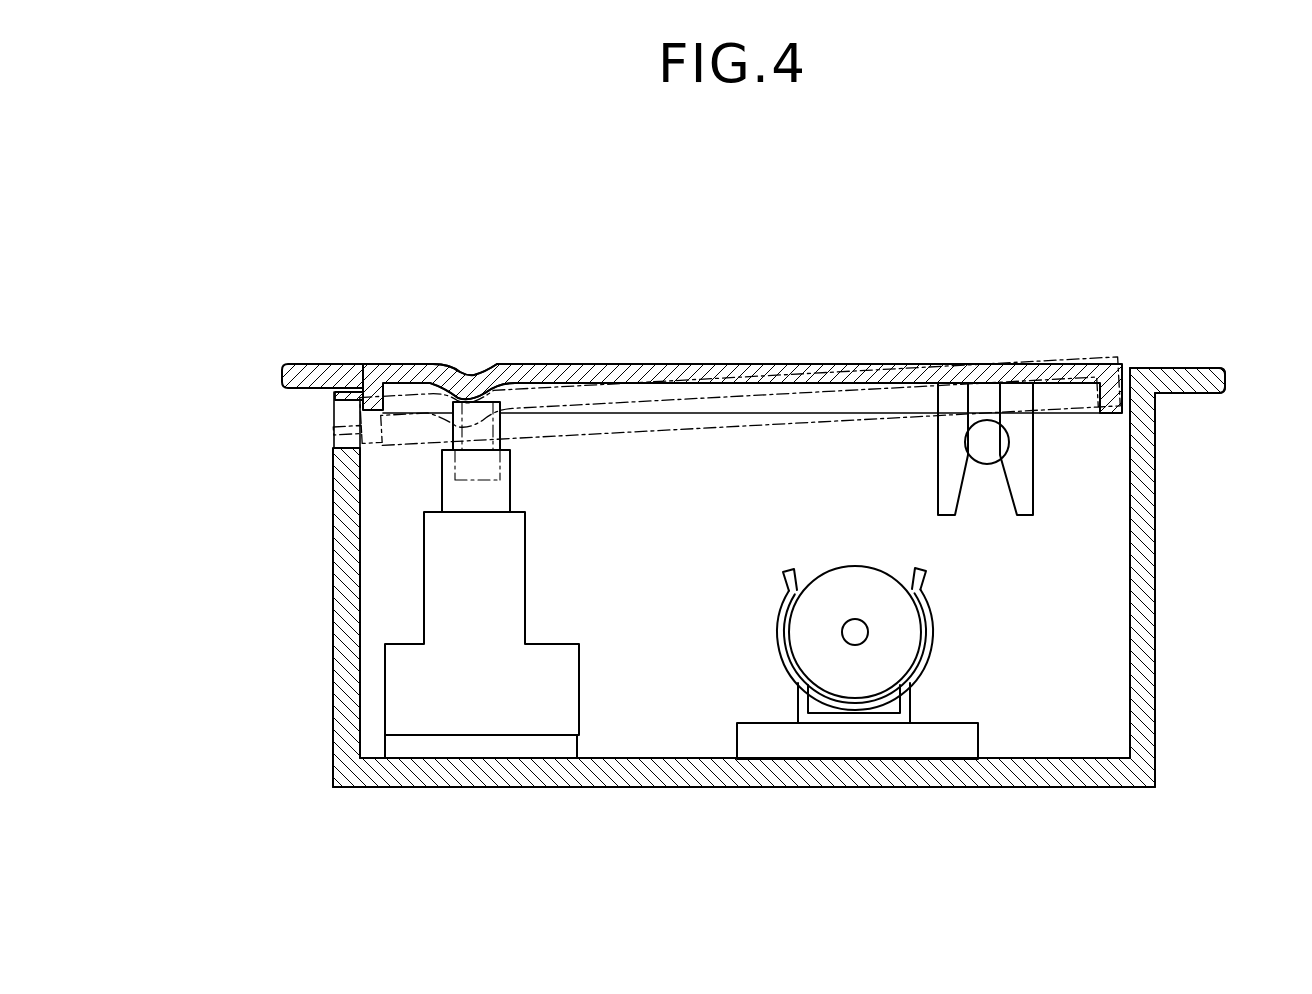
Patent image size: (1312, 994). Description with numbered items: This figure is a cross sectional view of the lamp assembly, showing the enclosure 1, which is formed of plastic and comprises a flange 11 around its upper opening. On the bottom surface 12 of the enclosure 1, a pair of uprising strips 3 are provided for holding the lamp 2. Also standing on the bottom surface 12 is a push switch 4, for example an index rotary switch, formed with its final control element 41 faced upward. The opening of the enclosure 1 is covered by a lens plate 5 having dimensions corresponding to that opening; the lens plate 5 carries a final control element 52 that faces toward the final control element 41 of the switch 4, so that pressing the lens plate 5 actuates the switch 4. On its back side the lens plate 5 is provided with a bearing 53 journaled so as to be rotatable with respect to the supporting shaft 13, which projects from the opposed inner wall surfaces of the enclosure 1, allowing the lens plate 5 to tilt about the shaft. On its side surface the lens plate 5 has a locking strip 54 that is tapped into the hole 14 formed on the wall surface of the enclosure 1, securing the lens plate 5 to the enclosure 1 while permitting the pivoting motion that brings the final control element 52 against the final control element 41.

The enclosure 1 is at (1172, 603).
The flange 11 is at (1190, 378).
The bottom surface 12 is at (997, 773).
The supporting shaft 13 is at (985, 450).
The hole 14 is at (335, 418).
The lamp 2 is at (885, 638).
The uprising strips 3 is at (778, 640).
The push switch 4 is at (480, 717).
The final control element 41 is at (465, 405).
The lens plate 5 is at (724, 359).
The final control element 52 is at (478, 402).
The bearing 53 is at (1018, 398).
The locking strip 54 is at (333, 400).